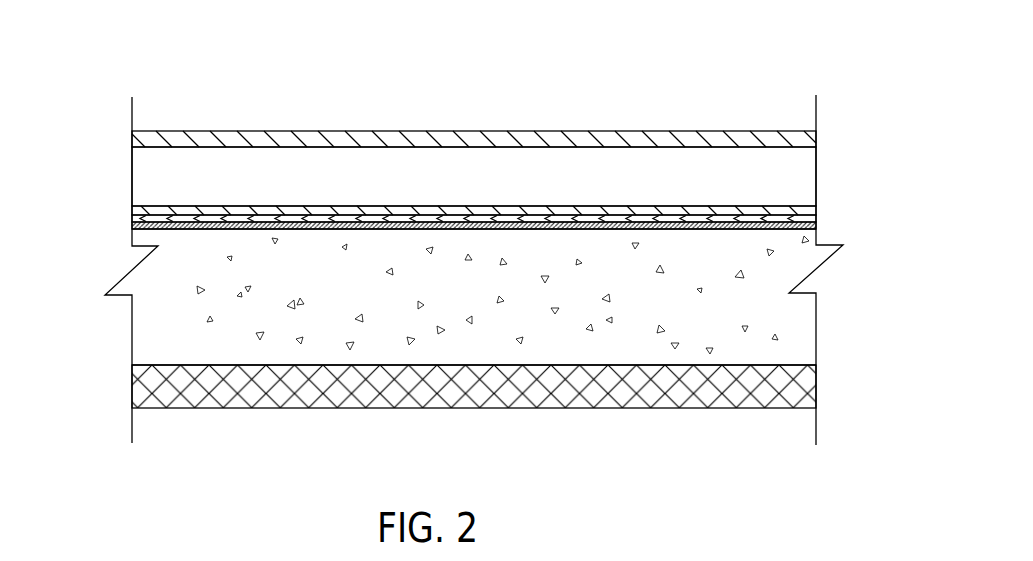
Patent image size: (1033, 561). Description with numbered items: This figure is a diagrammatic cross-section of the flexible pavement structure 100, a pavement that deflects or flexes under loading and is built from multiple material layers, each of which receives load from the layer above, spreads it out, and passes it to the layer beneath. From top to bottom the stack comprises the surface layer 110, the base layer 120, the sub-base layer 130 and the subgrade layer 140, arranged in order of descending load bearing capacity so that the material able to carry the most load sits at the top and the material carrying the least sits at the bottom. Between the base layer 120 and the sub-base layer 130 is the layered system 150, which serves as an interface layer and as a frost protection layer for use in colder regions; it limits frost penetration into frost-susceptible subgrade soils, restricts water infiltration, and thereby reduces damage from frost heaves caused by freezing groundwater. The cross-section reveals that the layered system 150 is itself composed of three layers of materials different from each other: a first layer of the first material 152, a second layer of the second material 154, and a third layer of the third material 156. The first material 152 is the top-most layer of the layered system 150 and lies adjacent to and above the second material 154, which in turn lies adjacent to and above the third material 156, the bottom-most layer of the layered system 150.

The flexible pavement structure 100 is at (748, 69).
The surface layer 110 is at (107, 131).
The base layer 120 is at (107, 147).
The sub-base layer 130 is at (107, 229).
The subgrade layer 140 is at (107, 365).
The layered system 150 is at (107, 207).
The first layer of the first material 152 is at (817, 203).
The second layer of the second material 154 is at (817, 217).
The third layer of the third material 156 is at (817, 228).